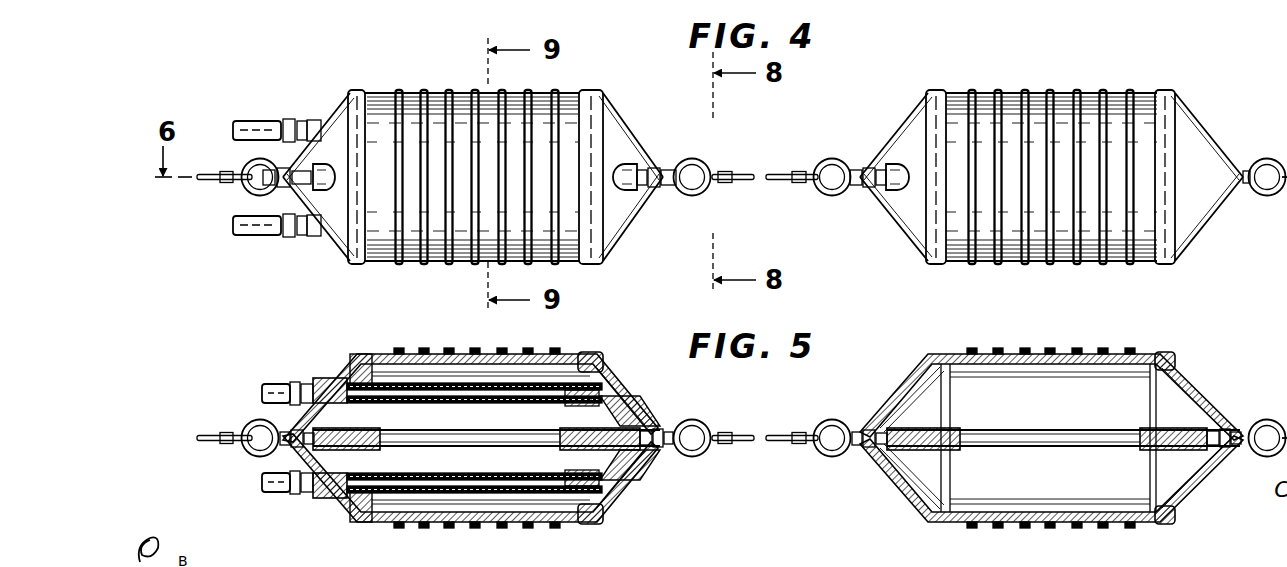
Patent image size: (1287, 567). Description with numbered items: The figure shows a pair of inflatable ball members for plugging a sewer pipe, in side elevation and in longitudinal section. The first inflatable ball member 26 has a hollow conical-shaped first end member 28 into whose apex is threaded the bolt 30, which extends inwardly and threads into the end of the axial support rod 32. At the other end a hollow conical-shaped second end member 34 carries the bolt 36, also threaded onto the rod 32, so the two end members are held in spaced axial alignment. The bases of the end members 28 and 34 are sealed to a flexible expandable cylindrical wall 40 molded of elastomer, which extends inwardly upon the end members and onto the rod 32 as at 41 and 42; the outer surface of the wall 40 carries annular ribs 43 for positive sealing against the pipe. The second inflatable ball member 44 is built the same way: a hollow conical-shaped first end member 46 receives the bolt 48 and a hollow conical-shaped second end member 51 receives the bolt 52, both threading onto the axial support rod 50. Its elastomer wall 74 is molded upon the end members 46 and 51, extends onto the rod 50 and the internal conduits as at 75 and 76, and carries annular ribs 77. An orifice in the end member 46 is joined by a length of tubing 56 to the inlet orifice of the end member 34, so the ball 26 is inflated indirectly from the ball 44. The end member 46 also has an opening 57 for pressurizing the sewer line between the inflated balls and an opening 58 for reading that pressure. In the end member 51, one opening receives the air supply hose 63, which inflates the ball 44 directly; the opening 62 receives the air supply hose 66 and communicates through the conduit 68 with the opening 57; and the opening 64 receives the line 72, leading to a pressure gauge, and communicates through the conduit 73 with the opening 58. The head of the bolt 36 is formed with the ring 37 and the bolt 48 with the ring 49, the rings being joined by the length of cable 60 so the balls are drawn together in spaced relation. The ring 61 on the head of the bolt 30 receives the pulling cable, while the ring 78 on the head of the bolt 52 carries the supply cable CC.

In FIG. 4, the supply cable CC is at (200, 182).
In FIG. 5, the supply cable CC is at (200, 448).
In FIG. 4, the first inflatable ball member 26 is at (1197, 109).
In FIG. 5, the first inflatable ball member 26 is at (1197, 385).
In FIG. 4, the first end member 28 is at (1215, 141).
In FIG. 5, the first end member 28 is at (1218, 411).
In FIG. 4, the bolt 30 is at (1253, 163).
In FIG. 5, the bolt 30 is at (1253, 425).
In FIG. 5, the axial support rod 32 is at (1055, 429).
In FIG. 4, the second end member 34 is at (895, 131).
In FIG. 5, the second end member 34 is at (895, 397).
In FIG. 5, the bolt 36 is at (858, 428).
In FIG. 4, the ring 37 is at (835, 159).
In FIG. 5, the ring 37 is at (838, 458).
In FIG. 4, the flexible expandable cylindrical wall 40 is at (1060, 100).
In FIG. 5, the flexible expandable cylindrical wall 40 is at (1062, 353).
In FIG. 5, the inward extension of wall 41 is at (920, 393).
In FIG. 5, the inward extension of wall 42 is at (1186, 429).
In FIG. 4, the annular ribs 43 is at (998, 91).
In FIG. 5, the annular ribs 43 is at (998, 349).
In FIG. 4, the second inflatable ball member 44 is at (619, 107).
In FIG. 5, the second inflatable ball member 44 is at (618, 367).
In FIG. 4, the first end member 46 is at (632, 136).
In FIG. 5, the first end member 46 is at (625, 395).
In FIG. 5, the bolt 48 is at (664, 431).
In FIG. 4, the ring 49 is at (705, 163).
In FIG. 5, the ring 49 is at (705, 425).
In FIG. 5, the axial support rod 50 is at (464, 436).
In FIG. 4, the second end member 51 is at (343, 115).
In FIG. 5, the second end member 51 is at (340, 372).
In FIG. 5, the bolt 52 is at (285, 432).
In FIG. 4, the length of tubing 56 is at (668, 188).
In FIG. 5, the opening 57 is at (620, 487).
In FIG. 5, the opening 58 is at (652, 415).
In FIG. 4, the length of cable 60 is at (748, 174).
In FIG. 5, the length of cable 60 is at (748, 435).
In FIG. 4, the ring 61 is at (1268, 197).
In FIG. 5, the ring 61 is at (1268, 458).
In FIG. 5, the opening 62 is at (330, 497).
In FIG. 4, the air supply hose 63 is at (268, 186).
In FIG. 5, the opening 64 is at (325, 380).
In FIG. 4, the air supply hose 66 is at (262, 237).
In FIG. 5, the air supply hose 66 is at (270, 493).
In FIG. 5, the conduit 68 is at (480, 485).
In FIG. 4, the line 72 is at (259, 120).
In FIG. 5, the line 72 is at (270, 382).
In FIG. 5, the conduit 73 is at (440, 383).
In FIG. 4, the flexible expandable cylindrical wall 74 is at (455, 95).
In FIG. 5, the flexible expandable cylindrical wall 74 is at (505, 353).
In FIG. 5, the inward extension of wall 75 is at (370, 431).
In FIG. 5, the inward extension of wall 76 is at (370, 383).
In FIG. 4, the annular ribs 77 is at (400, 91).
In FIG. 5, the annular ribs 77 is at (474, 350).
In FIG. 4, the ring 78 is at (250, 164).
In FIG. 5, the ring 78 is at (252, 455).